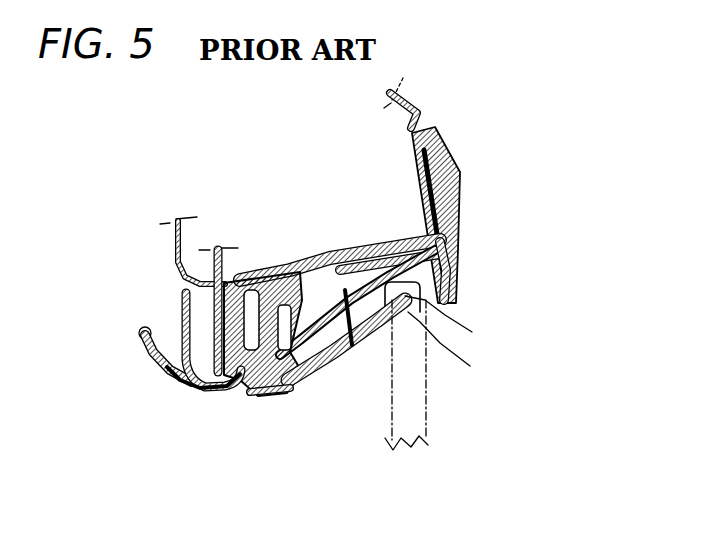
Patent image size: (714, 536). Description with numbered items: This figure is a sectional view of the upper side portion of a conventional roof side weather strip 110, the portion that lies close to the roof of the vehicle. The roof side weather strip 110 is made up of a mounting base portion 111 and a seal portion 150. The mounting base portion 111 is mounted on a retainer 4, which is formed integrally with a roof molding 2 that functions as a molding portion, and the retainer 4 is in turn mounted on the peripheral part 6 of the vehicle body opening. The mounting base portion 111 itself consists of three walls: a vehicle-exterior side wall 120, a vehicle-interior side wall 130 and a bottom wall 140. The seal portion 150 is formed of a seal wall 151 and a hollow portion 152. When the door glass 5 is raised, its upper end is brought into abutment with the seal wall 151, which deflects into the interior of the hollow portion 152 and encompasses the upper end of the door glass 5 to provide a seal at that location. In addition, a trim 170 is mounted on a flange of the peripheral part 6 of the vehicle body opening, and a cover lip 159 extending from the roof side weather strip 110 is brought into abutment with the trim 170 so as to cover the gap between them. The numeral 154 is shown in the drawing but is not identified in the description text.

The roof molding 2 is at (462, 190).
The retainer 4 is at (340, 211).
The peripheral part of the vehicle body opening 6 is at (390, 206).
The mounting base portion 111 is at (216, 213).
The bottom wall 140 is at (344, 248).
The vehicle-exterior side wall 120 is at (503, 271).
The hollow portion 152 is at (475, 300).
The seal portion 150 is at (427, 338).
The seal wall 151 is at (487, 351).
The door glass 5 is at (462, 375).
The trim 170 is at (138, 405).
The cover lip 159 is at (206, 366).
The vehicle-interior side wall 130 is at (260, 438).
The roof side weather strip 110 is at (276, 376).
The holding lip 154 is at (364, 389).